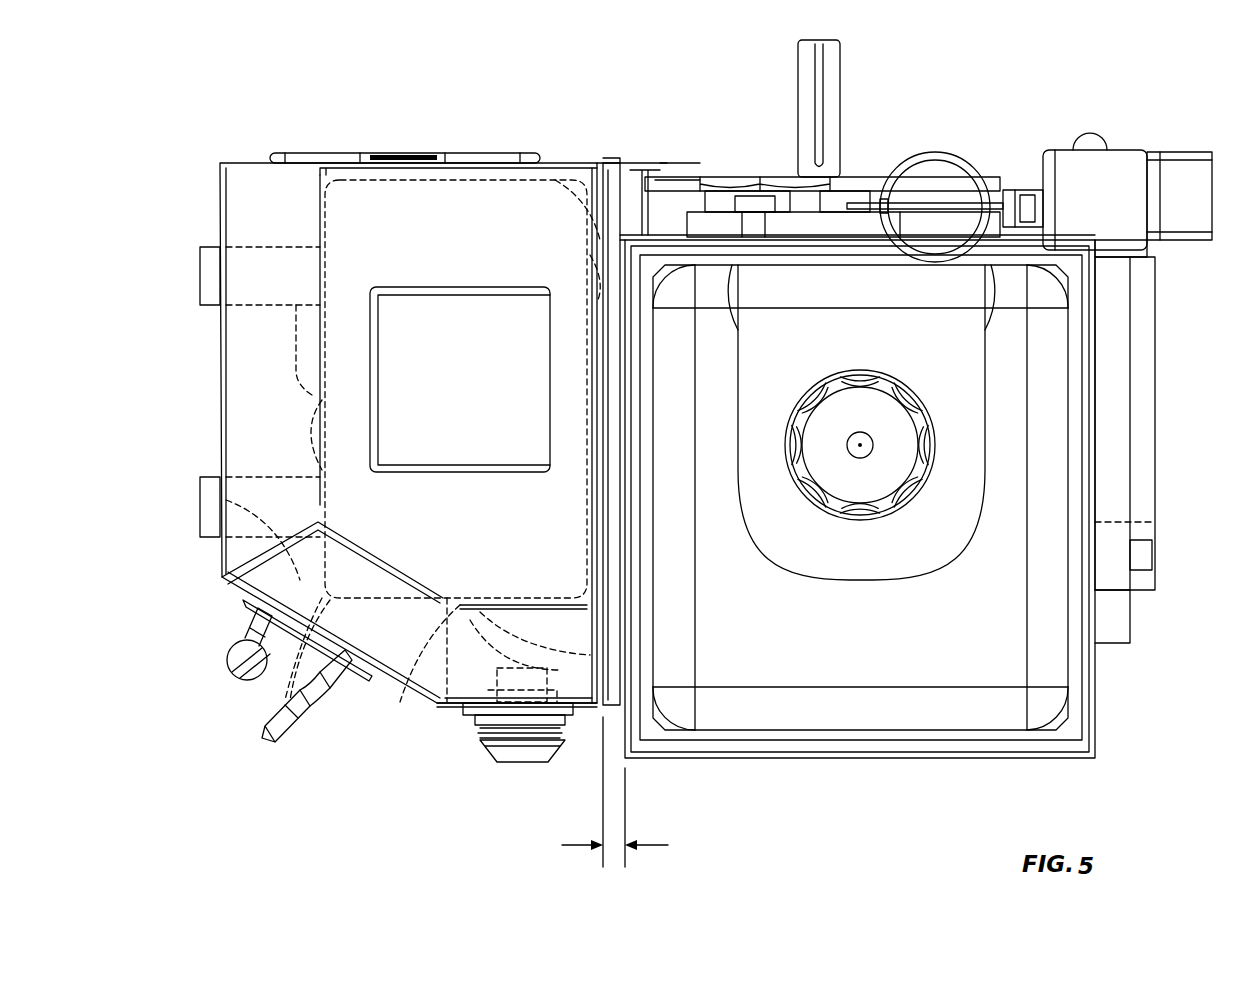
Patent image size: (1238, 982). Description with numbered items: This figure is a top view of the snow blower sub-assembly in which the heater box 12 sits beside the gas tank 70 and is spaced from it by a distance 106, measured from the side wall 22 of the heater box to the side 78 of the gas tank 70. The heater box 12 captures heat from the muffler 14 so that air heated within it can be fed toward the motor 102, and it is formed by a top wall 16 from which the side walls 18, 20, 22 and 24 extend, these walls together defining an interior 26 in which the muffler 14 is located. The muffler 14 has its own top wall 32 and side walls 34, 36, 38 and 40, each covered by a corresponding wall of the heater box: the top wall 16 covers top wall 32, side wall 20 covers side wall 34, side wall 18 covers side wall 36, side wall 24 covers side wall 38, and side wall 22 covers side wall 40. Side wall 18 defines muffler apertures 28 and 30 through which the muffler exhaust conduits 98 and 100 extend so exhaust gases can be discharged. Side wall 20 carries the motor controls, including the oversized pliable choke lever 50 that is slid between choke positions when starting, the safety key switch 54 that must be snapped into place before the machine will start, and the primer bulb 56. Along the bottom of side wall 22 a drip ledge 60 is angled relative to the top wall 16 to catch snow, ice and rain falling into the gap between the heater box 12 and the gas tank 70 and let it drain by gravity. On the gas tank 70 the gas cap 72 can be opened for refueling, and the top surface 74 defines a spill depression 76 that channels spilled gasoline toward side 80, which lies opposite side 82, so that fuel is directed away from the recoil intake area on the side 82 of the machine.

The heater box 12 is at (390, 175).
The muffler 14 is at (440, 695).
The top wall 16 is at (460, 413).
The side wall 18 is at (210, 215).
The side wall 20 is at (393, 698).
The side wall 22 is at (628, 163).
The side wall 24 is at (303, 156).
The interior 26 is at (300, 637).
The muffler aperture 28 is at (210, 247).
The muffler aperture 30 is at (200, 480).
The top wall 32 is at (365, 212).
The side wall 34 is at (388, 614).
The side wall 36 is at (312, 538).
The side wall 38 is at (483, 178).
The side wall 40 is at (597, 268).
The choke lever 50 is at (262, 738).
The safety key switch 54 is at (230, 670).
The primer bulb 56 is at (530, 740).
The drip ledge 60 is at (614, 210).
The gas tank 70 is at (1010, 620).
The gas cap 72 is at (803, 140).
The top surface 74 is at (1010, 480).
The spill depression 76 is at (960, 370).
The side 78 is at (622, 183).
The side 80 is at (1033, 180).
The side 82 is at (822, 766).
The muffler exhaust conduit 98 is at (200, 255).
The muffler exhaust conduit 100 is at (200, 515).
The motor 102 is at (836, 120).
The distance 106 is at (650, 846).